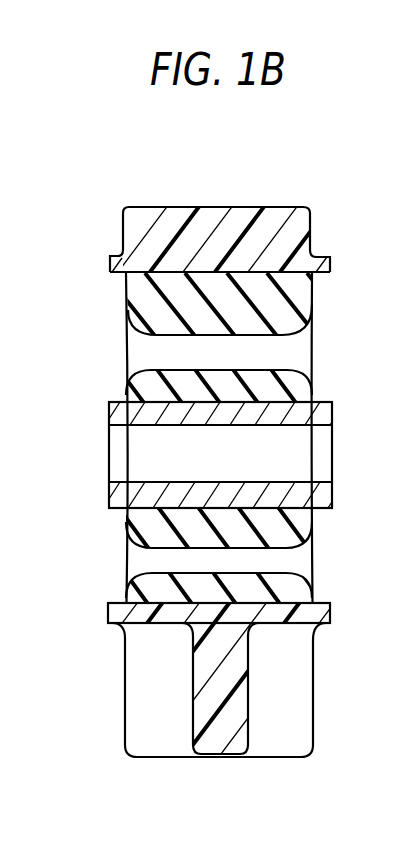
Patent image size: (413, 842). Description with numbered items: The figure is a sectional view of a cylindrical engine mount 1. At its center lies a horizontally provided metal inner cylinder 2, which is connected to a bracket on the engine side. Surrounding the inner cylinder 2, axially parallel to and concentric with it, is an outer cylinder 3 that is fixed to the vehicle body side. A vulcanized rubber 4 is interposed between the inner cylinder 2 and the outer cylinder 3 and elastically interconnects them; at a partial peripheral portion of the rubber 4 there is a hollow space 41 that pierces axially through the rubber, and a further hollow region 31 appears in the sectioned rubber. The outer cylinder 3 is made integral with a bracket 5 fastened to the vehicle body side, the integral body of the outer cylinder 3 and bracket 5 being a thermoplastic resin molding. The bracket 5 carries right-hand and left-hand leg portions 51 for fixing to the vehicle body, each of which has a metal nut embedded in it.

The engine mount 1 is at (178, 171).
The inner cylinder 2 is at (323, 417).
The outer cylinder 3 is at (330, 262).
The vulcanized rubber 4 is at (147, 296).
The hollow space 41 is at (273, 339).
The bracket 5 is at (267, 217).
The annular groove 31 is at (283, 552).
The leg portions 51 is at (138, 672).